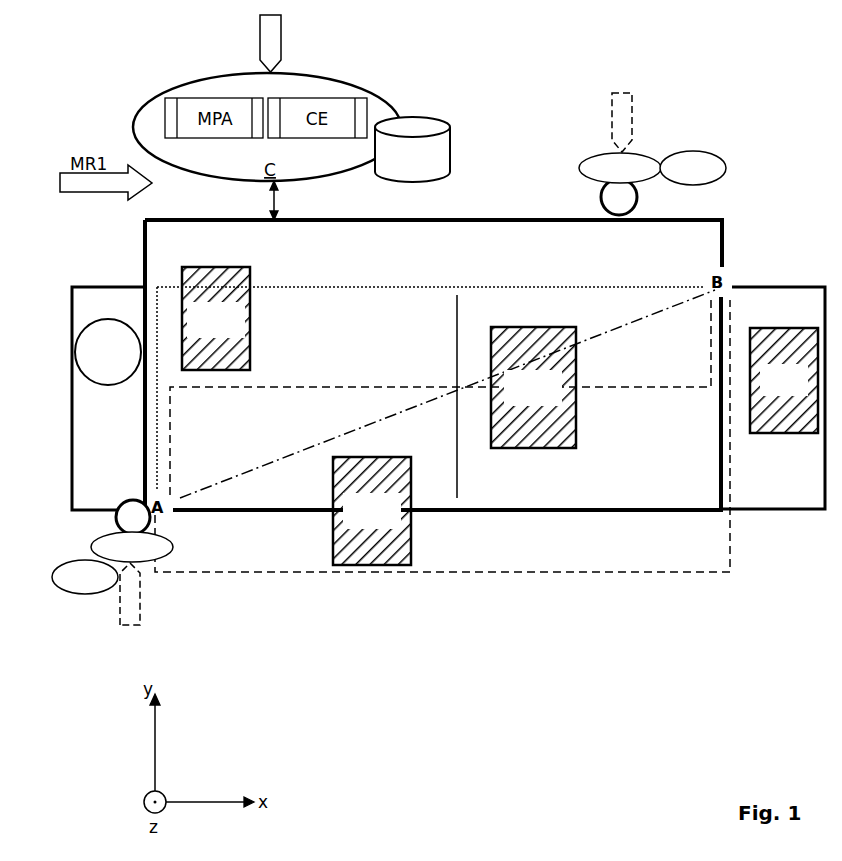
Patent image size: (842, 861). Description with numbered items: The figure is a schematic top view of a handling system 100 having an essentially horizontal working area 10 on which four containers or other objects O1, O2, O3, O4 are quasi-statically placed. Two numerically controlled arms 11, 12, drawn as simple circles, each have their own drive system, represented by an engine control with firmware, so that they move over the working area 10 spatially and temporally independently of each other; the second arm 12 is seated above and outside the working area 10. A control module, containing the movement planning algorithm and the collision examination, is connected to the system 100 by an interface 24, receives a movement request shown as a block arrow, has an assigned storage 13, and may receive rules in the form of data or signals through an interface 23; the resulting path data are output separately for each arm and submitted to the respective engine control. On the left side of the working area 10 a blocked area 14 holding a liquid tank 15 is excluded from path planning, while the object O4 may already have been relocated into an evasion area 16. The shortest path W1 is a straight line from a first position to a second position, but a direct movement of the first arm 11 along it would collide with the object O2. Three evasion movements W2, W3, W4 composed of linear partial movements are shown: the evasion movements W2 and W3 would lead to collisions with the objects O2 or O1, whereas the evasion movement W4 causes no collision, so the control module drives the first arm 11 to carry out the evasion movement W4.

The working area 10 is at (660, 510).
The first arm 11 is at (128, 500).
The second arm 12 is at (604, 214).
The storage 13 is at (447, 145).
The blocked area 14 is at (88, 498).
The liquid tank 15 is at (75, 345).
The evasion area 16 is at (773, 425).
The interface 23 is at (278, 22).
The interface 24 is at (278, 193).
The system 100 is at (749, 83).
The shortest path W1 is at (642, 317).
The evasion movement W2 is at (612, 388).
The evasion movement W3 is at (378, 288).
The evasion movement W4 is at (640, 575).
The container O1 is at (216, 318).
The object O2 is at (533, 387).
The object O3 is at (372, 511).
The object O4 is at (784, 380).